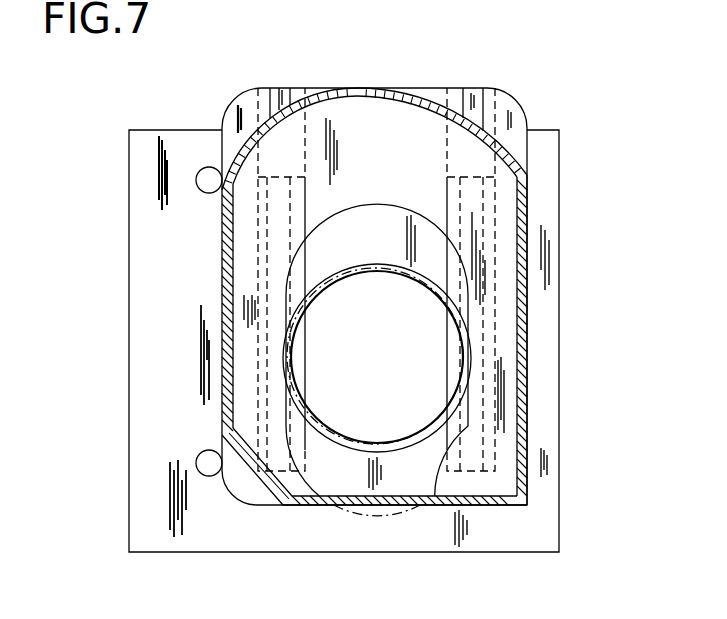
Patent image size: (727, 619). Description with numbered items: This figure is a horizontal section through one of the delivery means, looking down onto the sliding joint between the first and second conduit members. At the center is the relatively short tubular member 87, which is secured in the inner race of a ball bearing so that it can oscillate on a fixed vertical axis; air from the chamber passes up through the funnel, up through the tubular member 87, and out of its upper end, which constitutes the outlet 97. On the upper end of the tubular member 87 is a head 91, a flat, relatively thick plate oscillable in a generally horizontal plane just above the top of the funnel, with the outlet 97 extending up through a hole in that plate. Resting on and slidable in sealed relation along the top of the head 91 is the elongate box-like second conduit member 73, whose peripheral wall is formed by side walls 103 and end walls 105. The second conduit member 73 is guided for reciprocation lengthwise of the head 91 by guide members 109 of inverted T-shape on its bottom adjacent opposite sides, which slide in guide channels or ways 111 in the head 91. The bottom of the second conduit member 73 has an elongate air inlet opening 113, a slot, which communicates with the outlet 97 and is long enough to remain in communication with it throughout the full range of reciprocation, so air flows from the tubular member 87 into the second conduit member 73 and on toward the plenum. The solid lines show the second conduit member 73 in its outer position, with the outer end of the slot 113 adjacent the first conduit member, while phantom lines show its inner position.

The second conduit member 73 is at (222, 288).
The head 91 is at (522, 103).
The end walls 105 is at (436, 58).
The side walls 103 is at (222, 228).
The guide channels 111 is at (282, 88).
The guide members 109 is at (258, 362).
The air inlet opening 113 is at (376, 203).
The tubular member 87 is at (366, 237).
The outlet 97 is at (392, 341).